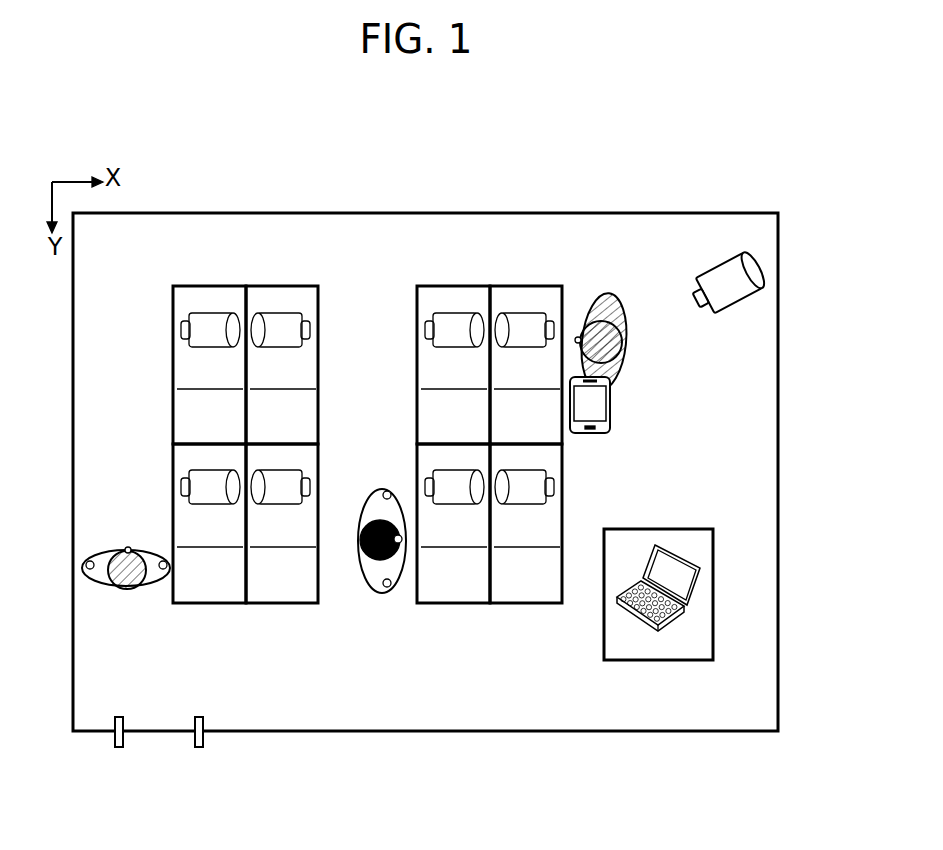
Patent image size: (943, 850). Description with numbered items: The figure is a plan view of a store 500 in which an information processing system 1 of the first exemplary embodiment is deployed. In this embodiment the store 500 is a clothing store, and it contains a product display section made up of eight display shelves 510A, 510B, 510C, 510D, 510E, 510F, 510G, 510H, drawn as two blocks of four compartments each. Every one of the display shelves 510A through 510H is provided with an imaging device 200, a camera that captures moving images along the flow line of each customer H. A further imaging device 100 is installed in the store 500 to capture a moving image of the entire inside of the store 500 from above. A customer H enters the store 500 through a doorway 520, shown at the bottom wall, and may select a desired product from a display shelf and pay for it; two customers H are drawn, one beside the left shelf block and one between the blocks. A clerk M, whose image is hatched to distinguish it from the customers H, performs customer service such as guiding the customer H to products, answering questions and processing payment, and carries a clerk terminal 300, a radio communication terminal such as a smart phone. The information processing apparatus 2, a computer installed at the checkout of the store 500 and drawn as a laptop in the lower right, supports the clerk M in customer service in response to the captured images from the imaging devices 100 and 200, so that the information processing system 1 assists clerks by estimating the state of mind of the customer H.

The information processing system 1 is at (626, 195).
The information processing apparatus 2 is at (668, 566).
The imaging device 100 is at (727, 271).
The imaging device 200 is at (183, 324).
The clerk terminal 300 is at (612, 414).
The store 500 is at (780, 293).
The display shelf 510A is at (209, 365).
The display shelf 510B is at (282, 365).
The display shelf 510C is at (209, 523).
The display shelf 510D is at (282, 523).
The display shelf 510E is at (453, 365).
The display shelf 510F is at (526, 365).
The display shelf 510G is at (453, 523).
The display shelf 510H is at (526, 523).
The doorway 520 is at (158, 733).
The customer H is at (121, 548).
The clerk M is at (624, 346).